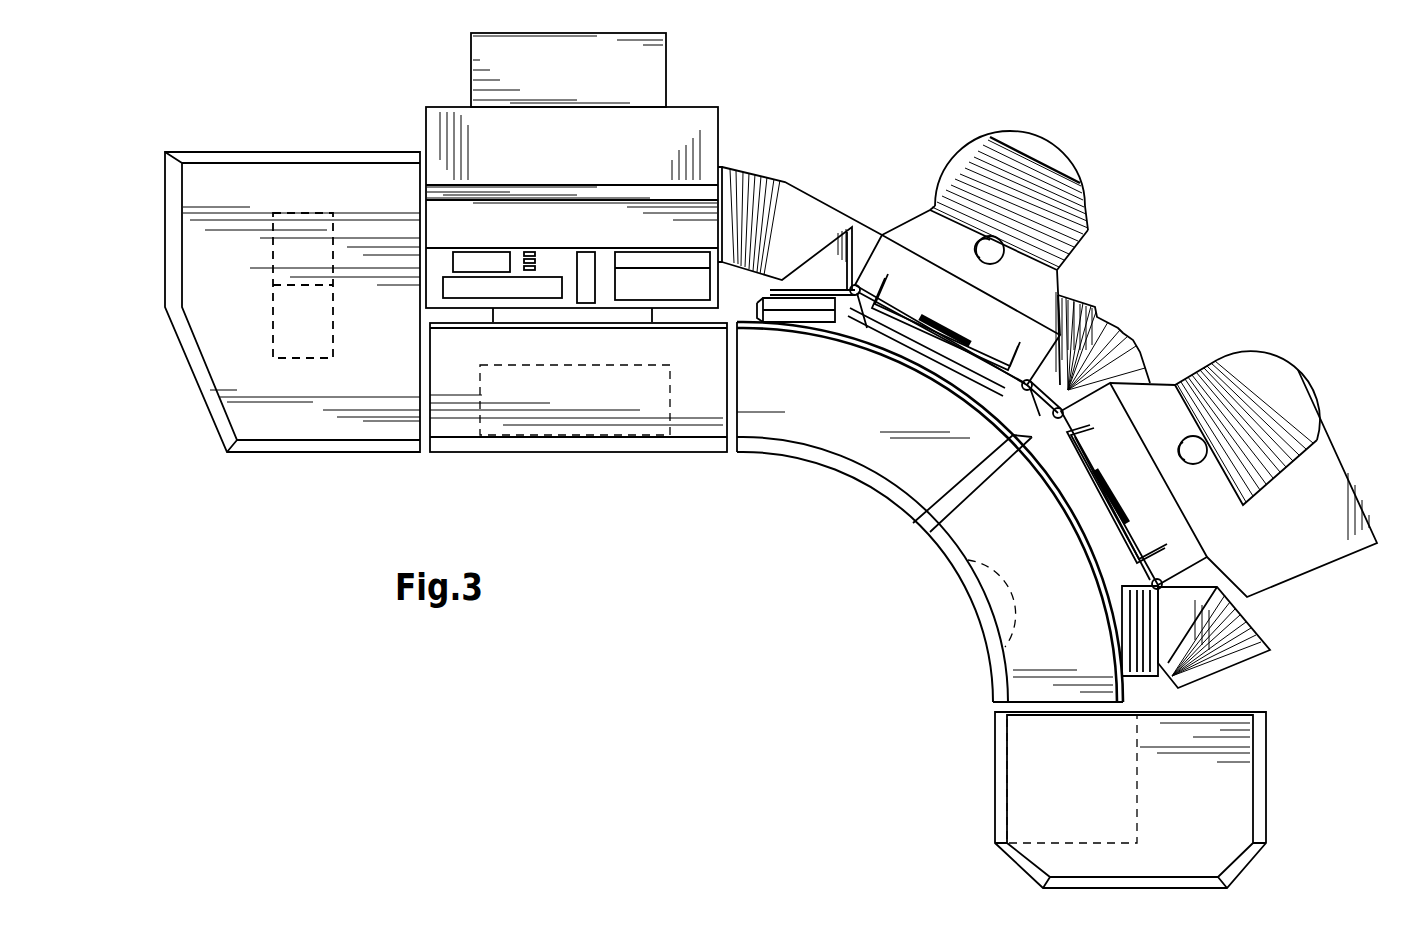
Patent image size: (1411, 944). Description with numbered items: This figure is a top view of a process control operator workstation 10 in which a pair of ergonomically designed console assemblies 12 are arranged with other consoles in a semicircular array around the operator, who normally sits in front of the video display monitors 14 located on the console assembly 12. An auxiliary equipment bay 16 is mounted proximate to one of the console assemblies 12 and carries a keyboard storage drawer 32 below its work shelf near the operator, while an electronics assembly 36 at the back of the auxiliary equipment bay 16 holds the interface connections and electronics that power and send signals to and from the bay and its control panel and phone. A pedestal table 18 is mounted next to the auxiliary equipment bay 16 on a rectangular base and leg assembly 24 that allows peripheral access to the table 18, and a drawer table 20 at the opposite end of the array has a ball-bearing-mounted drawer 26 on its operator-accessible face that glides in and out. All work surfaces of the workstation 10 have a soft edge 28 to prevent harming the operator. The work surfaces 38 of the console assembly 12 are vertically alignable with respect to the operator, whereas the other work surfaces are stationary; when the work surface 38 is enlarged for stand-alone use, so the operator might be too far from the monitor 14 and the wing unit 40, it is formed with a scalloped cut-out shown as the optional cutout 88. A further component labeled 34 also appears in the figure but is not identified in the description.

The process control operator workstation 10 is at (1247, 224).
The console assembly 12 is at (840, 494).
The video display monitor 14 is at (1035, 172).
The auxiliary equipment bay 16 is at (700, 110).
The pedestal table 18 is at (202, 322).
The drawer table 20 is at (1167, 833).
The rectangular base and leg assembly 24 is at (308, 315).
The drawer 26 is at (1035, 787).
The soft edge 28 is at (333, 452).
The keyboard storage drawer 32 is at (545, 373).
The table section 34 is at (682, 375).
The electronics assembly 36 is at (684, 59).
The work surface 38 is at (848, 413).
The wing unit 40 is at (808, 255).
The cutout 88 is at (1005, 572).